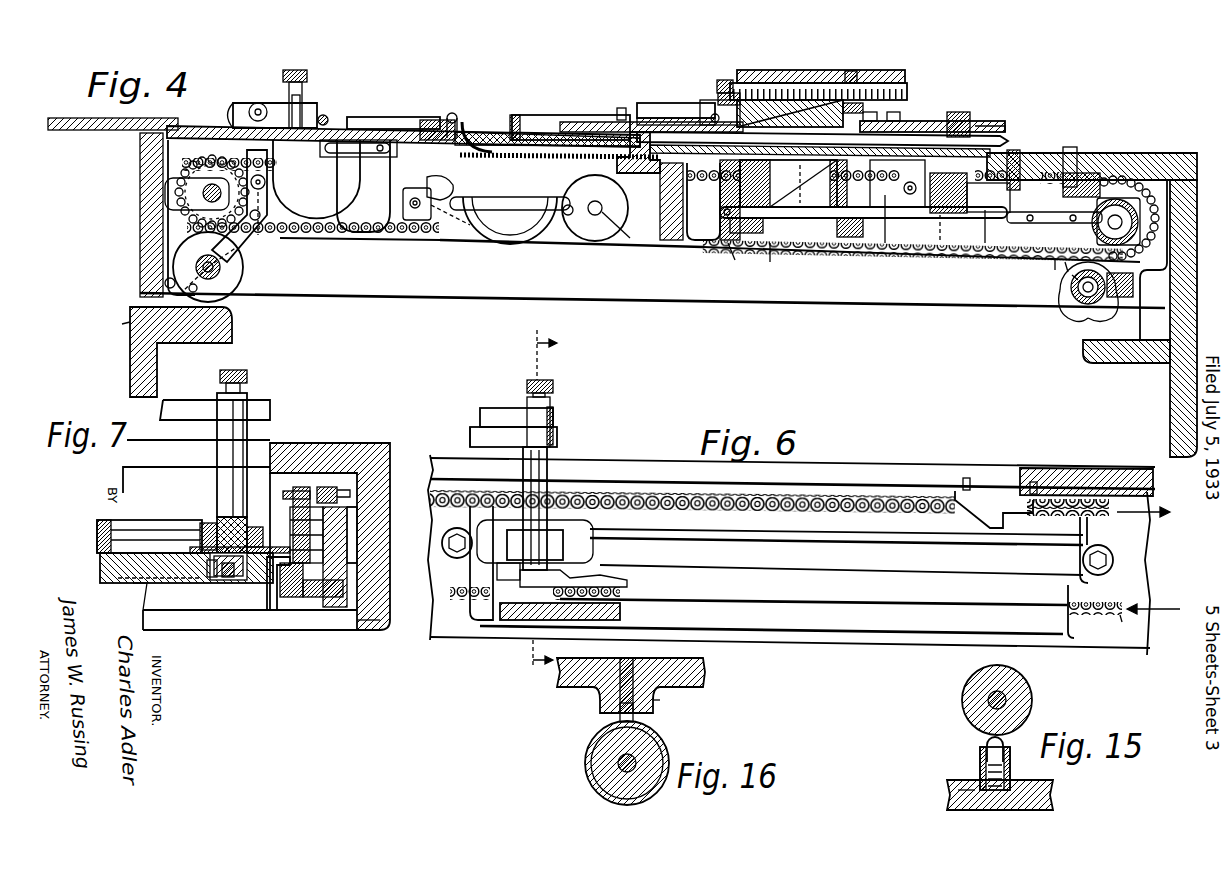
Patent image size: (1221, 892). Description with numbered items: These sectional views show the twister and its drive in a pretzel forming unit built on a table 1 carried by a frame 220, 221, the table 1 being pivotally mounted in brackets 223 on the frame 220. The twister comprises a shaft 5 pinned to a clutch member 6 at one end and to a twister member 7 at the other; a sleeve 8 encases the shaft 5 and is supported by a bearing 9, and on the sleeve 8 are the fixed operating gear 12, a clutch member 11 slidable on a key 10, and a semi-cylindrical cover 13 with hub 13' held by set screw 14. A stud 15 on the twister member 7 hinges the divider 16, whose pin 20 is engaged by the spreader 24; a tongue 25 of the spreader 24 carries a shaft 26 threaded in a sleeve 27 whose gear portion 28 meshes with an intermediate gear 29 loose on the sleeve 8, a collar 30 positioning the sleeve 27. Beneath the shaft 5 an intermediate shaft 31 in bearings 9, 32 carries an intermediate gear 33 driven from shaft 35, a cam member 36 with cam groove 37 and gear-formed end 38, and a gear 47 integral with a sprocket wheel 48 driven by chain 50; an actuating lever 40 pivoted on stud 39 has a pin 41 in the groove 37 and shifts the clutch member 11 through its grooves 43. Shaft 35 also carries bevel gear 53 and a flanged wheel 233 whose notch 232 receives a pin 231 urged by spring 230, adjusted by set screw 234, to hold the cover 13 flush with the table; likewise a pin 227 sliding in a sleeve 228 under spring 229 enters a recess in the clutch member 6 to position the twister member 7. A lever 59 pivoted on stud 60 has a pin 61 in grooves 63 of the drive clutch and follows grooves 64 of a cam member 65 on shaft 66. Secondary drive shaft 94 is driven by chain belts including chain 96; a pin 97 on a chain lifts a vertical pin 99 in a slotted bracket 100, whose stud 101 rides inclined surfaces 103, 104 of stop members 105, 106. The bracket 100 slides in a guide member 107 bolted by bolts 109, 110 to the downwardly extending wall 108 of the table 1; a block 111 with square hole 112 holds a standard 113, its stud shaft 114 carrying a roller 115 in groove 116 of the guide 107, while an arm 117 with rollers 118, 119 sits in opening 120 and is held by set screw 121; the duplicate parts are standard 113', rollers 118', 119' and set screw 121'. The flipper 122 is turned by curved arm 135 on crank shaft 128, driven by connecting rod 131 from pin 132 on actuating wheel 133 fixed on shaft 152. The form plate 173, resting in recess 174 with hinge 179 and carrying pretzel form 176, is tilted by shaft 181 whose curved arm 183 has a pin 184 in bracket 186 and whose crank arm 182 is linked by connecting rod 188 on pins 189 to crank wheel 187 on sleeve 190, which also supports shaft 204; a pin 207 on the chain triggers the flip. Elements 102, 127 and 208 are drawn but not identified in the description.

In FIG. 16, the table 1 is at (585, 690).
In FIG. 4, the shaft 5 is at (1003, 138).
In FIG. 15, the shaft 5 is at (990, 702).
In FIG. 4, the clutch member 6 is at (1013, 150).
In FIG. 15, the clutch member 6 is at (985, 683).
In FIG. 4, the twister member 7 is at (548, 115).
In FIG. 6, the twister member 7 is at (542, 510).
In FIG. 4, the sleeve 8 is at (812, 100).
In FIG. 4, the bearing 9 is at (772, 70).
In FIG. 4, the key 10 is at (975, 126).
In FIG. 4, the clutch member 11 is at (900, 116).
In FIG. 4, the operating gear 12 is at (905, 121).
In FIG. 4, the semi-cylindrical cover 13 is at (560, 117).
In FIG. 4, the hub 13' is at (621, 132).
In FIG. 4, the set screw 14 is at (675, 103).
In FIG. 4, the stud 15 is at (512, 118).
In FIG. 4, the divider 16 is at (525, 115).
In FIG. 4, the pin 20 is at (622, 108).
In FIG. 4, the spreader plate 24 is at (660, 103).
In FIG. 4, the tongue 25 is at (724, 80).
In FIG. 4, the shaft 26 is at (880, 83).
In FIG. 4, the threaded sleeve 27 is at (795, 70).
In FIG. 4, the gear portion 28 is at (735, 93).
In FIG. 4, the intermediate gear 29 is at (710, 100).
In FIG. 4, the collar 30 is at (852, 71).
In FIG. 4, the intermediate shaft 31 is at (800, 220).
In FIG. 4, the bearing 32 is at (985, 248).
In FIG. 15, the bearing 32 is at (1055, 800).
In FIG. 4, the intermediate gear 33 is at (850, 243).
In FIG. 4, the shaft 35 is at (950, 262).
In FIG. 16, the shaft 35 is at (618, 762).
In FIG. 4, the cam member 36 is at (898, 243).
In FIG. 4, the cam groove 37 is at (912, 243).
In FIG. 4, the gear-formed end 38 is at (878, 243).
In FIG. 4, the stud 39 is at (880, 243).
In FIG. 4, the actuating lever 40 is at (888, 243).
In FIG. 4, the pin 41 is at (943, 260).
In FIG. 4, the grooves 43 is at (958, 112).
In FIG. 4, the gear 47 is at (735, 258).
In FIG. 4, the sprocket wheel 48 is at (770, 262).
In FIG. 4, the chain 50 is at (762, 262).
In FIG. 4, the bevel gear 53 is at (1085, 173).
In FIG. 4, the lever 59 is at (1125, 290).
In FIG. 4, the stud 60 is at (1182, 158).
In FIG. 4, the pin 61 is at (1118, 198).
In FIG. 4, the grooves 63 is at (1055, 272).
In FIG. 4, the grooves 64 is at (1085, 305).
In FIG. 4, the cam member 65 is at (1068, 275).
In FIG. 4, the shaft 66 is at (1073, 283).
In FIG. 4, the secondary drive shaft 94 is at (205, 193).
In FIG. 7, the chain belt 96 is at (340, 490).
In FIG. 6, the chain belt 96 is at (1095, 616).
In FIG. 7, the pin 97 is at (322, 597).
In FIG. 6, the pin 97 is at (462, 600).
In FIG. 7, the vertical pin 99 is at (328, 487).
In FIG. 7, the slotted bracket 100 is at (97, 528).
In FIG. 6, the slotted bracket 100 is at (563, 545).
In FIG. 7, the stud 101 is at (295, 487).
In FIG. 7, the screw 102 is at (293, 597).
In FIG. 6, the inclined surface 103 is at (993, 526).
In FIG. 7, the inclined surface 104 is at (270, 582).
In FIG. 6, the stop member 105 is at (997, 500).
In FIG. 7, the stop member 106 is at (275, 597).
In FIG. 6, the stop member 106 is at (570, 612).
In FIG. 7, the guide member 107 is at (100, 570).
In FIG. 6, the guide member 107 is at (1075, 527).
In FIG. 7, the downwardly extending wall 108 is at (380, 560).
In FIG. 6, the downwardly extending wall 108 is at (1145, 636).
In FIG. 6, the bolt 109 is at (1110, 563).
In FIG. 7, the bolt 110 is at (365, 625).
In FIG. 7, the block 111 is at (220, 525).
In FIG. 7, the square hole 112 is at (203, 530).
In FIG. 7, the standard 113 is at (266, 446).
In FIG. 6, the standard 113 is at (568, 466).
In FIG. 4, the standard 113' is at (318, 91).
In FIG. 7, the stud shaft 114 is at (215, 575).
In FIG. 7, the roller 115 is at (226, 580).
In FIG. 6, the roller 115 is at (520, 575).
In FIG. 7, the groove 116 is at (210, 580).
In FIG. 6, the groove 116 is at (620, 582).
In FIG. 7, the arm 117 is at (270, 410).
In FIG. 6, the arm 117 is at (490, 408).
In FIG. 6, the roller 118 is at (546, 431).
In FIG. 4, the roller 118' is at (335, 102).
In FIG. 6, the roller 119 is at (448, 411).
In FIG. 4, the roller 119' is at (232, 95).
In FIG. 6, the opening 120 is at (553, 410).
In FIG. 7, the set screw 121 is at (261, 372).
In FIG. 6, the set screw 121 is at (561, 371).
In FIG. 4, the set screw 121' is at (301, 81).
In FIG. 4, the flipper 122 is at (465, 120).
In FIG. 4, the pin 127 is at (452, 113).
In FIG. 4, the crank shaft 128 is at (460, 200).
In FIG. 4, the connecting rod 131 is at (485, 218).
In FIG. 4, the pin 132 is at (568, 216).
In FIG. 4, the actuating wheel 133 is at (600, 240).
In FIG. 4, the curved arm 135 is at (517, 235).
In FIG. 4, the shaft 152 is at (632, 240).
In FIG. 4, the form plate 173 is at (432, 120).
In FIG. 4, the shoulder or recess 174 is at (235, 112).
In FIG. 4, the pretzel form 176 is at (390, 117).
In FIG. 4, the hinge 179 is at (259, 103).
In FIG. 4, the shaft 181 is at (266, 182).
In FIG. 4, the crank arm 182 is at (261, 212).
In FIG. 4, the curved arm 183 is at (323, 215).
In FIG. 4, the pin 184 is at (375, 222).
In FIG. 4, the bracket 186 is at (432, 190).
In FIG. 4, the actuating crank wheel 187 is at (222, 279).
In FIG. 4, the connecting rod 188 is at (243, 245).
In FIG. 4, the pin 189 is at (190, 290).
In FIG. 4, the sleeve 190 is at (196, 267).
In FIG. 4, the shaft 204 is at (215, 283).
In FIG. 7, the pin 207 is at (345, 590).
In FIG. 4, the pin 208 is at (326, 116).
In FIG. 4, the frame 220 is at (157, 368).
In FIG. 4, the frame 221 is at (1180, 399).
In FIG. 4, the brackets 223 is at (130, 337).
In FIG. 15, the pin 227 is at (982, 760).
In FIG. 15, the sleeve 228 is at (985, 748).
In FIG. 15, the spring 229 is at (958, 790).
In FIG. 16, the spring 230 is at (660, 705).
In FIG. 4, the pin 231 is at (1072, 147).
In FIG. 16, the pin 231 is at (635, 718).
In FIG. 16, the notch 232 is at (600, 748).
In FIG. 4, the flanged wheel 233 is at (988, 197).
In FIG. 16, the flanged wheel 233 is at (600, 778).
In FIG. 16, the set screw 234 is at (640, 662).